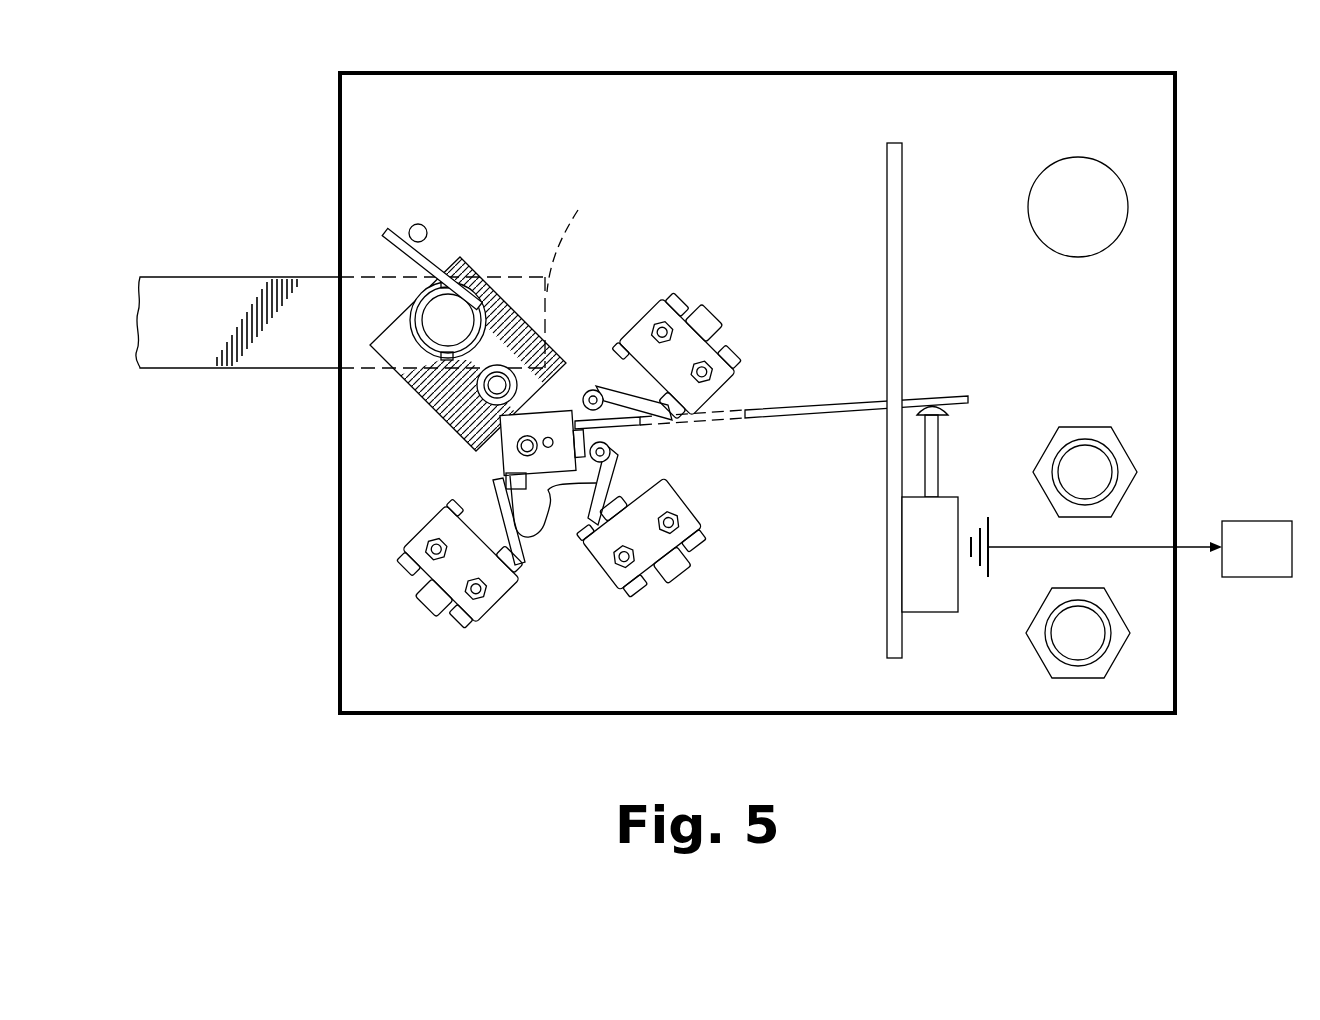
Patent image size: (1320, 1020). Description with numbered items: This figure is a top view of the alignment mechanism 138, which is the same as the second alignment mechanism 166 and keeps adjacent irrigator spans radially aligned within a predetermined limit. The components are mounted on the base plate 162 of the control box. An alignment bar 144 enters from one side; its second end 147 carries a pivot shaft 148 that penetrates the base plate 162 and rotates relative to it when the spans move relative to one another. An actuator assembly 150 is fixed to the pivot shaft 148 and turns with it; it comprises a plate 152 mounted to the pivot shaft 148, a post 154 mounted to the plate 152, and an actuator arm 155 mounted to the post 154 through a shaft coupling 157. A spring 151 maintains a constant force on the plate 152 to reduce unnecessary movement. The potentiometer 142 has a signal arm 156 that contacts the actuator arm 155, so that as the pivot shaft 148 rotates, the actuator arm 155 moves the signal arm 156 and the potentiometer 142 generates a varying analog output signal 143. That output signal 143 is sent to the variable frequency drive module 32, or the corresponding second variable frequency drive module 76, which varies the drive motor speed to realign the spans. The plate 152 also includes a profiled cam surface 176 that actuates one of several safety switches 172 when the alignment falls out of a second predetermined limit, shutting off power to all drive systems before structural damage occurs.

The alignment mechanism 138 is at (757, 367).
The second alignment mechanism 166 is at (836, 108).
The base plate 162 is at (688, 715).
The alignment bar 144 is at (292, 346).
The second end 147 is at (587, 278).
The pivot shaft 148 is at (455, 318).
The spring 151 is at (430, 258).
The plate 152 is at (546, 392).
The post 154 is at (520, 447).
The actuator arm 155 is at (806, 422).
The signal arm 156 is at (938, 445).
The shaft coupling 157 is at (480, 420).
The safety switch 172 is at (678, 352).
The cam surface 176 is at (549, 507).
The actuator assembly 150 is at (573, 563).
The potentiometer 142 is at (932, 597).
The output signal 143 is at (978, 503).
The variable frequency drive module 32 is at (1259, 593).
The second variable frequency drive module 76 is at (1251, 578).